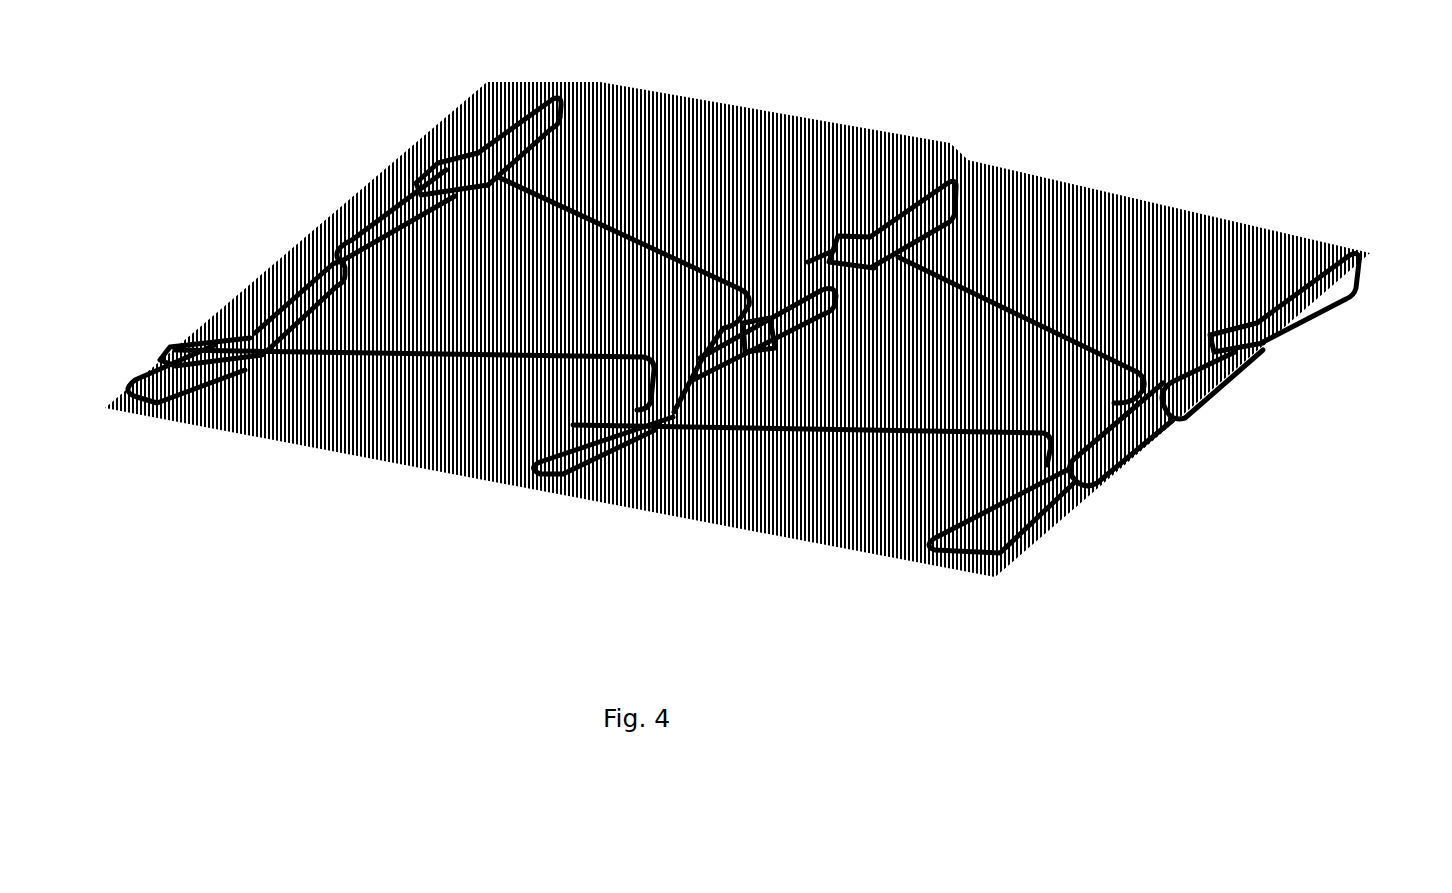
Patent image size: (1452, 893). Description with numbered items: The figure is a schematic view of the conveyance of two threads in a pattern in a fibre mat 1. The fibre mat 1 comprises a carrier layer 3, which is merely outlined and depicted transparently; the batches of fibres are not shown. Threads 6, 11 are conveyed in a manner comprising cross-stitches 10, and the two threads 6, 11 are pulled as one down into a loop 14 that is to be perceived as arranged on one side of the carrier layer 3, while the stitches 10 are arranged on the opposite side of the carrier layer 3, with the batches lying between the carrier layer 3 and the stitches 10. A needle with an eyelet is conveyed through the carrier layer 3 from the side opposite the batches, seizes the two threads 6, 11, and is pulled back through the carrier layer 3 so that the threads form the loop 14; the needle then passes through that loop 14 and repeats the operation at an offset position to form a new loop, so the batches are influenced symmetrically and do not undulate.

The fibre mat 1 is at (185, 128).
The carrier layer 3 is at (182, 310).
The thread 6 is at (490, 378).
The cross-stitches 10 is at (880, 437).
The thread 11 is at (717, 433).
The loop 14 is at (673, 432).